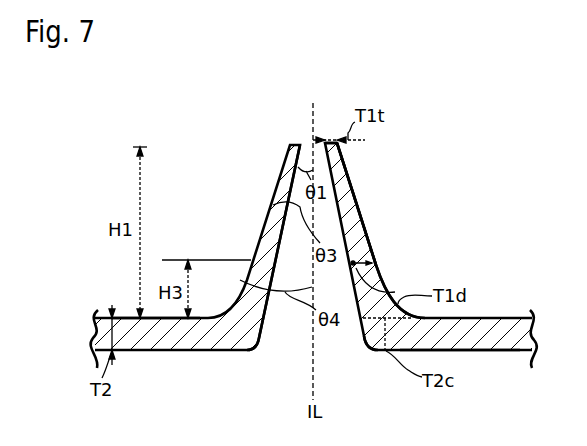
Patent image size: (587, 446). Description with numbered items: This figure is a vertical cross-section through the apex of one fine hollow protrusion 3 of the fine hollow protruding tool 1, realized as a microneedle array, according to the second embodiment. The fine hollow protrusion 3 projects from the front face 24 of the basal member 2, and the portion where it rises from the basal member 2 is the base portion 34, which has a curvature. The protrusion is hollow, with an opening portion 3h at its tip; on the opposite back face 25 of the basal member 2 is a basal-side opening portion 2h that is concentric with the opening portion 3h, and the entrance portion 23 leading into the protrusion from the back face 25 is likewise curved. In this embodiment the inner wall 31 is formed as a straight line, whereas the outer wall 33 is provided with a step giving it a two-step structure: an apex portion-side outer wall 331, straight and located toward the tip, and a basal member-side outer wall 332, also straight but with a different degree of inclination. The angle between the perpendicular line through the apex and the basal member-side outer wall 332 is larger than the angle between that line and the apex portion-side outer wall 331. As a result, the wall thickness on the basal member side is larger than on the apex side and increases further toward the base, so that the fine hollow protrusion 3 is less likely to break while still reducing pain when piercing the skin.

The fine hollow protruding tool 1 is at (432, 132).
The basal member 2 is at (512, 317).
The fine hollow protrusion 3 is at (354, 179).
The basal-side opening portion 2h is at (288, 345).
The opening portion 3h is at (322, 137).
The entrance portion 23 is at (248, 355).
The front face 24 is at (125, 317).
The back face 25 is at (478, 351).
The inner wall 31 is at (363, 335).
The outer wall 33 is at (447, 202).
The apex portion-side outer wall 331 is at (357, 210).
The basal member-side outer wall 332 is at (383, 283).
The base portion 34 is at (412, 310).